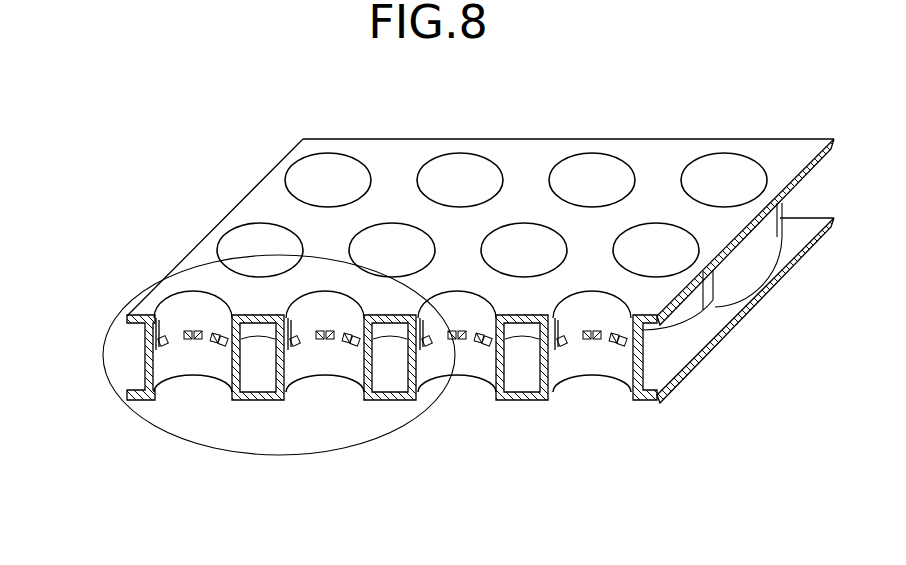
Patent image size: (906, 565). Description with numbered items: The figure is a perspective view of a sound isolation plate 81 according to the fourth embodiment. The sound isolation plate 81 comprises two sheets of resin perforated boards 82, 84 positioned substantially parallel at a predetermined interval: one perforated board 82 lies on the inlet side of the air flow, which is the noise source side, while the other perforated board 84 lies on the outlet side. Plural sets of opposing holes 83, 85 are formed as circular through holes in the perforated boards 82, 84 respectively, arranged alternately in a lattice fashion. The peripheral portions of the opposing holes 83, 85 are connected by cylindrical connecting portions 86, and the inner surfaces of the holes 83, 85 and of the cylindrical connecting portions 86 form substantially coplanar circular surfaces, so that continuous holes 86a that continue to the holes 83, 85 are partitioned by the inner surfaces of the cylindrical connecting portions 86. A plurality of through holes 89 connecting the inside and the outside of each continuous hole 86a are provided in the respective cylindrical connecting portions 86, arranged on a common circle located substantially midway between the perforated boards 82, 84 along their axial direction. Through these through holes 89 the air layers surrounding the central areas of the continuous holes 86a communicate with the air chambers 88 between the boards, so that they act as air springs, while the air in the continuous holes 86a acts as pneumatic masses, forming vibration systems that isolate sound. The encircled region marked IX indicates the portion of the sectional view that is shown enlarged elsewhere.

The sound isolation plate 81 is at (685, 110).
The perforated board 82 is at (799, 144).
The holes 83 is at (303, 170).
The perforated board 84 is at (797, 258).
The holes 85 is at (163, 398).
The cylindrical connecting portions 86 is at (130, 390).
The continuous holes 86a is at (146, 337).
The air chambers 88 is at (258, 402).
The through holes 89 is at (210, 342).
The section IX indicator IX is at (118, 302).